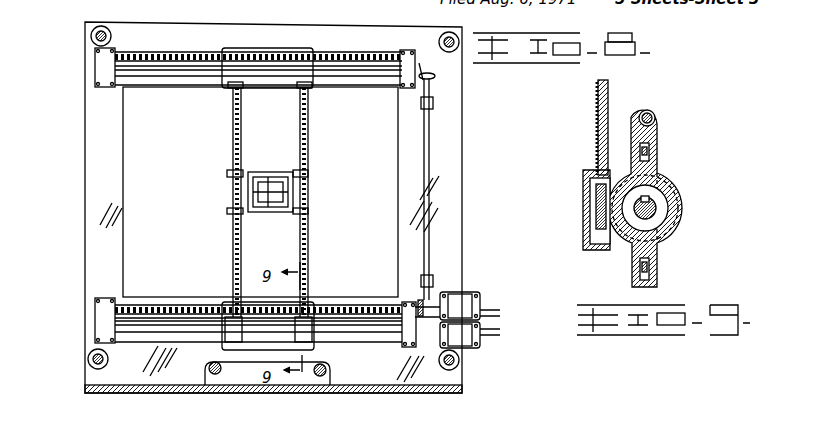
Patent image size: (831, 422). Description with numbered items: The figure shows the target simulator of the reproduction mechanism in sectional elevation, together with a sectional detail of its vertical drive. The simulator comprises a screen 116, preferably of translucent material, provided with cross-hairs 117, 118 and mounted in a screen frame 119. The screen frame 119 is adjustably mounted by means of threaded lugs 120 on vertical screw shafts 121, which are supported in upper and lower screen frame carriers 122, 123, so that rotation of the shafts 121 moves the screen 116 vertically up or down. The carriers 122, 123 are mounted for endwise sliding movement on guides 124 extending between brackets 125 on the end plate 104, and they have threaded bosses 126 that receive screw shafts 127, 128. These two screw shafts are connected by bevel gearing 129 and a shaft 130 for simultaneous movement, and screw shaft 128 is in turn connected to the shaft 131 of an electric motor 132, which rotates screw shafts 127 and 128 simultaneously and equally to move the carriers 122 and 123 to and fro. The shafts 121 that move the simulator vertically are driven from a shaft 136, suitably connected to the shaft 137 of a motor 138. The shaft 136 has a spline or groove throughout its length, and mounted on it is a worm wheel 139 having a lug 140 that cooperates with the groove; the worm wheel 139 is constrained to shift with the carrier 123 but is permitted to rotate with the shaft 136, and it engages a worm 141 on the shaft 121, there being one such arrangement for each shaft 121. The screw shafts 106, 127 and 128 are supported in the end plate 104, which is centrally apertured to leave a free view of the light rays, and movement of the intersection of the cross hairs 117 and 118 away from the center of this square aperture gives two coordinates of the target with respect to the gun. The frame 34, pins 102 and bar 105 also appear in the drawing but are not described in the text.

In FIG. 8, the carriage 34 is at (260, 166).
In FIG. 8, the locating pin 102 is at (213, 378).
In FIG. 8, the end plate 104 is at (462, 210).
In FIG. 8, the base bar 105 is at (437, 392).
In FIG. 8, the screw shaft 106 is at (91, 38).
In FIG. 8, the screen 116 is at (262, 200).
In FIG. 8, the cross-hair 117 is at (276, 188).
In FIG. 8, the cross-hair 118 is at (265, 186).
In FIG. 8, the screen frame 119 is at (284, 215).
In FIG. 8, the threaded lug 120 is at (228, 173).
In FIG. 8, the screw shaft 121 is at (243, 106).
In FIG. 9, the screw shaft 121 is at (598, 108).
In FIG. 8, the screen frame carrier 122 is at (281, 76).
In FIG. 8, the screen frame carrier 123 is at (281, 334).
In FIG. 9, the screen frame carrier 123 is at (658, 140).
In FIG. 8, the guide 124 is at (336, 55).
In FIG. 9, the guide 124 is at (658, 156).
In FIG. 8, the bracket 125 is at (96, 70).
In FIG. 8, the threaded boss 126 is at (224, 60).
In FIG. 9, the threaded boss 126 is at (655, 108).
In FIG. 8, the screw shaft 127 is at (352, 62).
In FIG. 8, the screw shaft 128 is at (345, 308).
In FIG. 9, the screw shaft 128 is at (657, 120).
In FIG. 8, the bevel gearing 129 is at (426, 76).
In FIG. 8, the shaft 130 is at (430, 136).
In FIG. 8, the motor shaft 131 is at (493, 310).
In FIG. 8, the electric motor 132 is at (462, 295).
In FIG. 8, the shaft 136 is at (210, 316).
In FIG. 9, the shaft 136 is at (660, 209).
In FIG. 8, the motor shaft 137 is at (496, 331).
In FIG. 8, the motor 138 is at (466, 334).
In FIG. 9, the worm wheel 139 is at (678, 225).
In FIG. 9, the lug 140 is at (650, 199).
In FIG. 9, the worm 141 is at (590, 214).